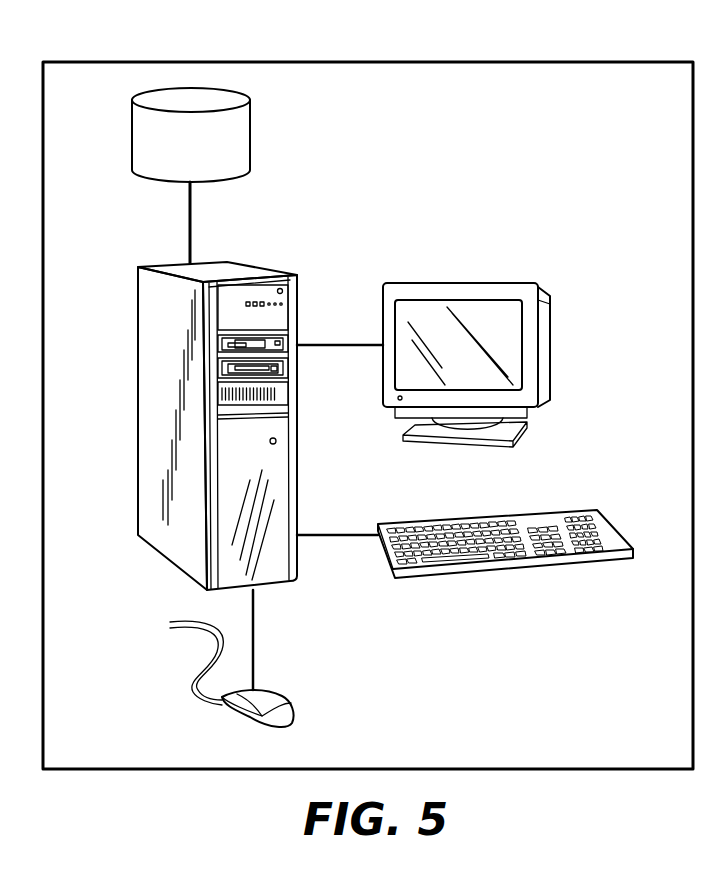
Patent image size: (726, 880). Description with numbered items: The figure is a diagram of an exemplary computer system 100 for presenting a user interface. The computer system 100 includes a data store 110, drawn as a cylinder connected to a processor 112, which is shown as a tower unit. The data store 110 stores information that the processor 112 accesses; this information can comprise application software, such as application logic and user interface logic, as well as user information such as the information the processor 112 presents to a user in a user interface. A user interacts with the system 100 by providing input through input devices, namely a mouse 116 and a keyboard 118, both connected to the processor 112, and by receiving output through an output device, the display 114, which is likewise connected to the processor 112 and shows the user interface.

The computer system 100 is at (292, 60).
The data store 110 is at (252, 132).
The processor 112 is at (236, 262).
The display 114 is at (479, 282).
The mouse 116 is at (270, 690).
The keyboard 118 is at (460, 519).